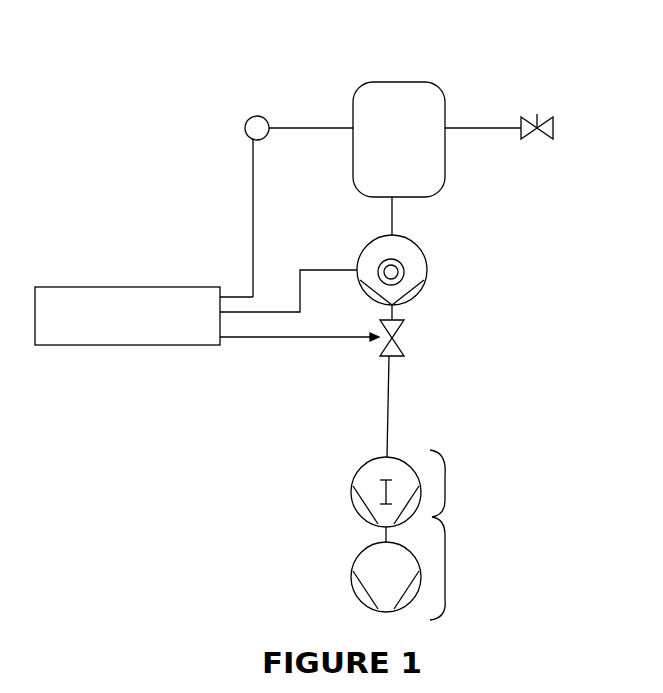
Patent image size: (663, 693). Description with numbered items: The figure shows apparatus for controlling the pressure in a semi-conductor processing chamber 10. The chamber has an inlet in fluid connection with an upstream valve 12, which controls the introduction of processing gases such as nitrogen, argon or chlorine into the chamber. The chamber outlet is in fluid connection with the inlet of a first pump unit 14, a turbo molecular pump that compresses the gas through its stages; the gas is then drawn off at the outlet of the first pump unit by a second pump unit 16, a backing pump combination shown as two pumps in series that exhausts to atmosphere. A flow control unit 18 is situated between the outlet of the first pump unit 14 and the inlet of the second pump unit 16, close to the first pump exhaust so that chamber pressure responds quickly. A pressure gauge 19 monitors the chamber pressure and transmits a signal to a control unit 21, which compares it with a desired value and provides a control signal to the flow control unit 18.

The semi-conductor processing chamber 10 is at (389, 125).
The upstream valve 12 is at (545, 118).
The first pump unit 14 is at (422, 252).
The second pump unit 16 is at (442, 516).
The flow control unit 18 is at (404, 338).
The pressure gauge 19 is at (249, 119).
The control unit 21 is at (137, 320).